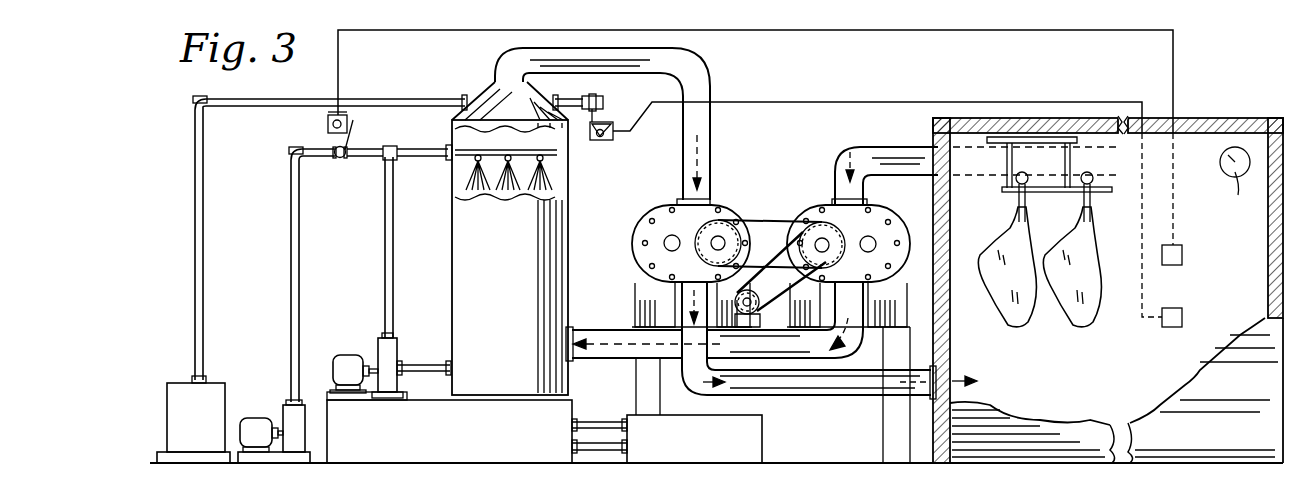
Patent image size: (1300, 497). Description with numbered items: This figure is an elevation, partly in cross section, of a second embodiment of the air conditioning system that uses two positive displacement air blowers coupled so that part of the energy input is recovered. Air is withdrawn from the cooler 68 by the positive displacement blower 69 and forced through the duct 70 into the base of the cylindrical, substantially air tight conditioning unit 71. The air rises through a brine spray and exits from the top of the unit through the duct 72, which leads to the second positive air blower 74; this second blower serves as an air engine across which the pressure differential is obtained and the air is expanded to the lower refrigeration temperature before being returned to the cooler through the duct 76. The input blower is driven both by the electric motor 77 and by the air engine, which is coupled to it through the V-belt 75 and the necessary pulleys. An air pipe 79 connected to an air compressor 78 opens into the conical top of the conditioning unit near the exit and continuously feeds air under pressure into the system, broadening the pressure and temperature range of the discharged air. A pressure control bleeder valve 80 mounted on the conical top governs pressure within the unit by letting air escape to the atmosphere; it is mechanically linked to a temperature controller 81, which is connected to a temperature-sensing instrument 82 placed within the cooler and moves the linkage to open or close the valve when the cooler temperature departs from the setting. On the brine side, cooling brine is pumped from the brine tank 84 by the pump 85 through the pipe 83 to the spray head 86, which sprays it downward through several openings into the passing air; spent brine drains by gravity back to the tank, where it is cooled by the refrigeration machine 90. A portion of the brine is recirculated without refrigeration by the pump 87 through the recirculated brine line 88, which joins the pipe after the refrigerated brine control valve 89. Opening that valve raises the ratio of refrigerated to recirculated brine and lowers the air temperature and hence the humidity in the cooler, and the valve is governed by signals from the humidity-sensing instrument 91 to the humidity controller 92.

The cooler 68 is at (1157, 385).
The positive displacement blower 69 is at (879, 207).
The duct 70 is at (597, 338).
The conditioning unit 71 is at (537, 243).
The duct 72 is at (668, 61).
The second positive air blower 74 is at (727, 204).
The V-belt 75 is at (766, 222).
The duct 76 is at (790, 382).
The electric motor 77 is at (758, 294).
The air compressor 78 is at (212, 392).
The air pipe 79 is at (196, 230).
The pressure control bleeder valve 80 is at (597, 101).
The temperature controller 81 is at (600, 141).
The temperature-sensing instrument 82 is at (1182, 316).
The pipe 83 is at (295, 237).
The brine tank 84 is at (404, 440).
The pump 85 is at (261, 418).
The spray head 86 is at (516, 162).
The pump 87 is at (350, 360).
The recirculated brine line 88 is at (385, 254).
The refrigerated brine control valve 89 is at (340, 160).
The refrigeration machine 90 is at (673, 445).
The humidity-sensing instrument 91 is at (1182, 253).
The humidity controller 92 is at (327, 122).